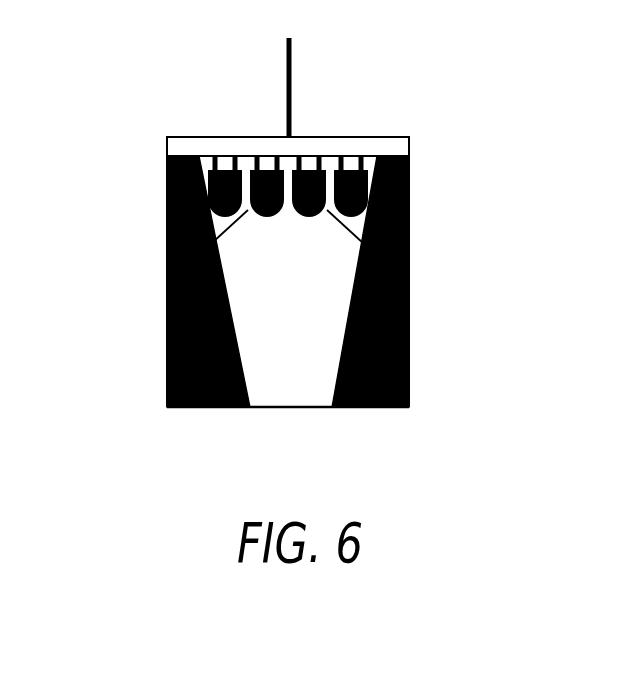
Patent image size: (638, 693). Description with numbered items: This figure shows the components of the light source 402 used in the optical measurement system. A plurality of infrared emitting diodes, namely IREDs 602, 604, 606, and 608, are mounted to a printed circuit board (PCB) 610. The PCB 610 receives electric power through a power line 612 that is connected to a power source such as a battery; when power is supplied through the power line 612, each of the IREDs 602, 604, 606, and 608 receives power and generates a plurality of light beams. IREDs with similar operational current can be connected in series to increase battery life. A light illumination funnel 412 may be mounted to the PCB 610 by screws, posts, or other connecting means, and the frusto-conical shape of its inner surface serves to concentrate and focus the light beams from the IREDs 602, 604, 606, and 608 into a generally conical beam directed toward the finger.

The light source 402 is at (349, 148).
The light illumination funnel 412 is at (408, 182).
The IRED 602 is at (168, 223).
The IRED 604 is at (168, 275).
The IRED 606 is at (408, 282).
The IRED 608 is at (408, 220).
The printed circuit board 610 is at (385, 147).
The power line 612 is at (287, 100).